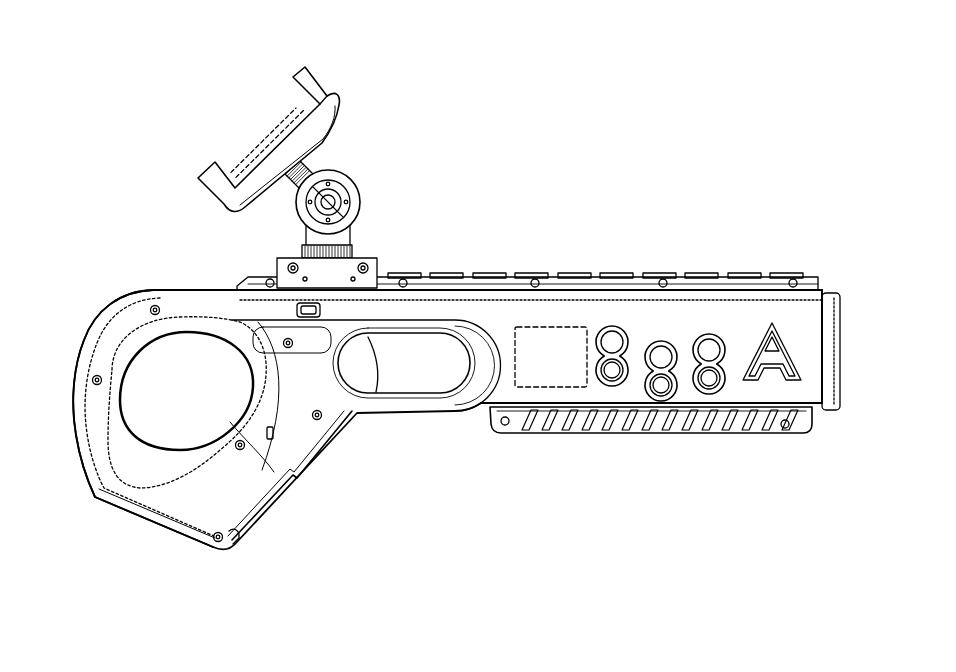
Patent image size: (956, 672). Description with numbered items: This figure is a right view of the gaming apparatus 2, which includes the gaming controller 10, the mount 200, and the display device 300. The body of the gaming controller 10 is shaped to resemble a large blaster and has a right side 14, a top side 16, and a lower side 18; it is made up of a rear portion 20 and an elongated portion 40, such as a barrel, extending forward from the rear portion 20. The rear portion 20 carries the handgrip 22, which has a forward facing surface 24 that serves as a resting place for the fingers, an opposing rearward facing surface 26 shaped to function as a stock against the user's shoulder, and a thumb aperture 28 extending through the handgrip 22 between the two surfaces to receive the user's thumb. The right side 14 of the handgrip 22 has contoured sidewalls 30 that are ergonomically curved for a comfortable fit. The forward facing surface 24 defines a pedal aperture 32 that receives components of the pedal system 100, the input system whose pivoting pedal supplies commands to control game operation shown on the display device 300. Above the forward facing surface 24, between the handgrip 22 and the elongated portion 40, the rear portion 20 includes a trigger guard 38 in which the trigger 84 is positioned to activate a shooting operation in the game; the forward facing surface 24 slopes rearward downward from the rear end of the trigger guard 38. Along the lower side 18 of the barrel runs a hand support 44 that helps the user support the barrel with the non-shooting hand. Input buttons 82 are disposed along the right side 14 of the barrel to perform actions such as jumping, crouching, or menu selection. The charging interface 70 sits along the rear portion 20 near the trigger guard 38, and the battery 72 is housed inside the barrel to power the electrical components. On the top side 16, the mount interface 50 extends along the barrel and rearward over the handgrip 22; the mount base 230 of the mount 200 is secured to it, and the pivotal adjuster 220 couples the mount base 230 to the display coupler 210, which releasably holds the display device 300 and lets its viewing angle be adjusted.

The gaming apparatus 2 is at (112, 92).
The gaming controller 10 is at (117, 251).
The right side 14 is at (806, 393).
The top side 16 is at (759, 229).
The lower side 18 is at (766, 459).
The rear portion 20 is at (188, 585).
The handgrip 22 is at (169, 521).
The forward facing surface 24 is at (247, 554).
The rearward facing surface 26 is at (73, 349).
The thumb aperture 28 is at (134, 400).
The contoured sidewalls 30 is at (162, 481).
The pedal aperture 32 is at (231, 531).
The trigger guard 38 is at (400, 392).
The elongated portion 40 is at (617, 509).
The hand support 44 is at (573, 440).
The mount interface 50 is at (450, 261).
The charging interface 70 is at (296, 308).
The battery 72 is at (545, 372).
The input buttons 82 is at (611, 342).
The trigger 84 is at (374, 393).
The pedal system 100 is at (329, 488).
The mount 200 is at (321, 38).
The display coupler 210 is at (337, 105).
The pivotal adjuster 220 is at (351, 194).
The mount base 230 is at (374, 262).
The display device 300 is at (257, 140).